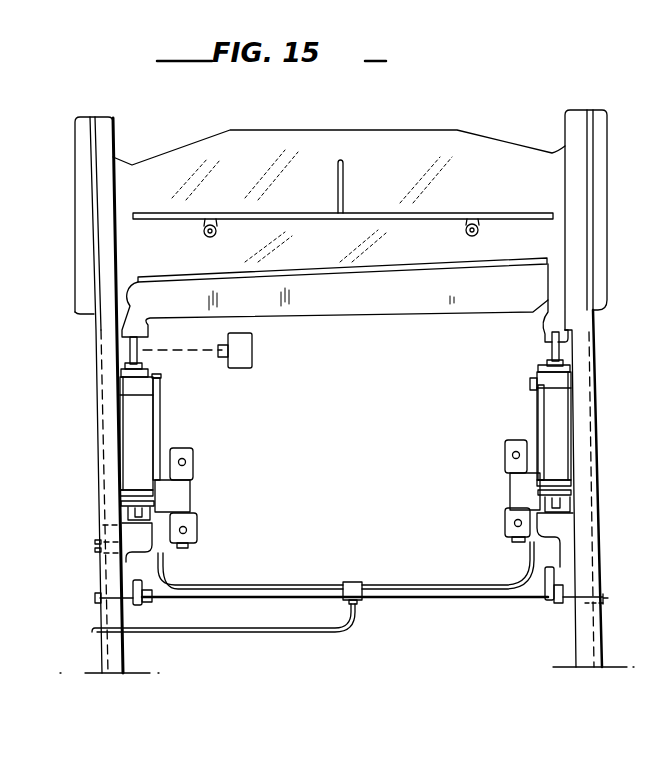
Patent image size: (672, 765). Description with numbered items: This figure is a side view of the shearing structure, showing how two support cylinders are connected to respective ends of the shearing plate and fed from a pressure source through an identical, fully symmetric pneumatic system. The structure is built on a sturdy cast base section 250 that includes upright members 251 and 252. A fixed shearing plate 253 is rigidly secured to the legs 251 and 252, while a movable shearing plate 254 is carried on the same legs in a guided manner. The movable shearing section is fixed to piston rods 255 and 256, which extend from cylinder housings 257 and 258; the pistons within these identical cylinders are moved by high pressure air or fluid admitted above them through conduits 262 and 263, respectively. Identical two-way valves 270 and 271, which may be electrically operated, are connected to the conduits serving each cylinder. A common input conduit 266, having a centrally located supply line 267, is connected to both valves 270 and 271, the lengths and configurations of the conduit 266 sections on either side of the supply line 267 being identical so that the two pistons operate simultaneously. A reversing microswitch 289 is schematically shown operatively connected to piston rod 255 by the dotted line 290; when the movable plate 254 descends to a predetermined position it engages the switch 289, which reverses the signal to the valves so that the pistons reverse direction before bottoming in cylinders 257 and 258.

The cast base section 250 is at (607, 464).
The upright member 251 is at (101, 446).
The upright member 252 is at (583, 404).
The fixed shearing plate 253 is at (357, 300).
The movable shearing plate 254 is at (443, 144).
The piston rod 255 is at (127, 354).
The piston rod 256 is at (551, 348).
The cylinder housing 257 is at (137, 435).
The cylinder housing 258 is at (556, 418).
The conduit 262 is at (160, 405).
The conduit 263 is at (538, 398).
The common input conduit 266 is at (413, 558).
The supply line 267 is at (313, 630).
The two-way valve 270 is at (200, 509).
The two-way valve 271 is at (508, 488).
The reversing microswitch 289 is at (242, 368).
The dotted line 290 is at (176, 351).